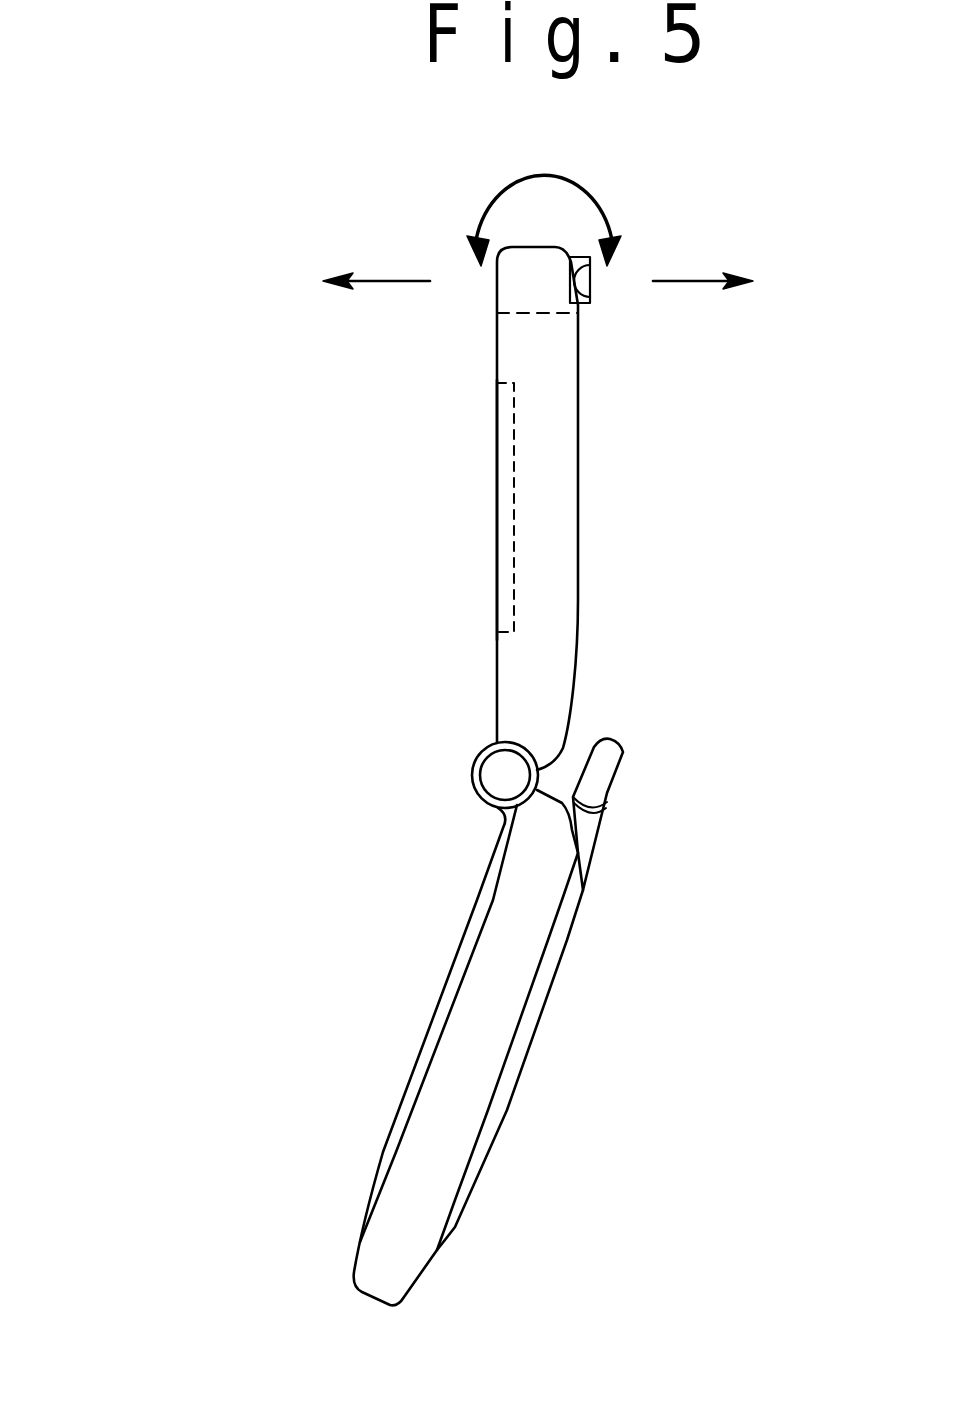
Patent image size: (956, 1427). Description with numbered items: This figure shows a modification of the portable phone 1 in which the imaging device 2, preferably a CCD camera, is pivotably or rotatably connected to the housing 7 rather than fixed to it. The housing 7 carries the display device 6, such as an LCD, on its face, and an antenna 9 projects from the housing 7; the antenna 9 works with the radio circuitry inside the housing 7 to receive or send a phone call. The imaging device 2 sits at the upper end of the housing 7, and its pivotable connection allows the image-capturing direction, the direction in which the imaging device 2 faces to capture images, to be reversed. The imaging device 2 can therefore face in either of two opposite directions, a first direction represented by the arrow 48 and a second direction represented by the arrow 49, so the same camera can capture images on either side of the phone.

The portable phone 1 is at (230, 347).
The imaging device 2 is at (593, 280).
The display device 6 is at (503, 475).
The housing 7 is at (578, 542).
The antenna 9 is at (617, 764).
The arrow (first direction) 48 is at (382, 280).
The arrow (second direction) 49 is at (693, 283).